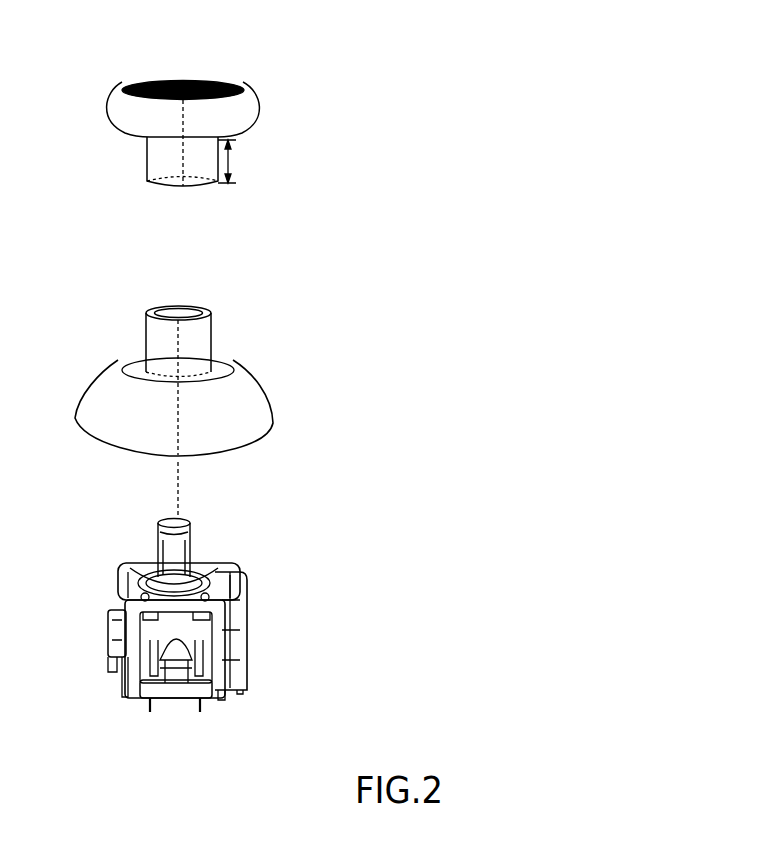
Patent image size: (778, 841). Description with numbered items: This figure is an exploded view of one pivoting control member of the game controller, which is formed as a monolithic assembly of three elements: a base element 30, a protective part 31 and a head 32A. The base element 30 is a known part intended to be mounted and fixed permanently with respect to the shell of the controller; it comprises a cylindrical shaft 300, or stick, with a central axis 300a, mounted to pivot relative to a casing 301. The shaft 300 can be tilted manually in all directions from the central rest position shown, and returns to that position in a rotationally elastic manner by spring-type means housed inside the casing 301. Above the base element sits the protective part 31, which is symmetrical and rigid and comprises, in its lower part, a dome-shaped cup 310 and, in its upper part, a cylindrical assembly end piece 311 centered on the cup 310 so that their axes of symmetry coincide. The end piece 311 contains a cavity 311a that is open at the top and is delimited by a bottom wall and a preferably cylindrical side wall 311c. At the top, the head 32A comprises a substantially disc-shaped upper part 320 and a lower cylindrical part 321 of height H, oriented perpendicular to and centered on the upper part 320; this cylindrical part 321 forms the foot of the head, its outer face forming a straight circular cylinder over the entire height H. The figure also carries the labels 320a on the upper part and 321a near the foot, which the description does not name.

The head 32A is at (301, 136).
The disc-shaped upper part 320 is at (269, 104).
The top surface of cap head 320a is at (204, 83).
The lower cylindrical part 321 is at (133, 162).
The stem bottom end 321a is at (200, 165).
The dome-shaped cup 310 is at (252, 422).
The height H is at (236, 161).
The protective part 31 is at (381, 347).
The cylindrical assembly end piece 311 is at (135, 341).
The cavity 311a is at (200, 306).
The side wall 311c is at (195, 342).
The base element 30 is at (333, 598).
The cylindrical shaft 300 is at (191, 551).
The central axis 300a is at (178, 511).
The casing 301 is at (247, 627).